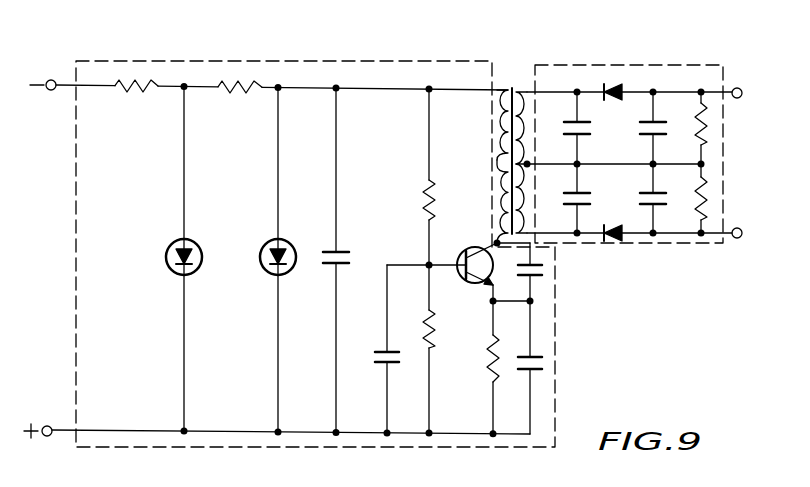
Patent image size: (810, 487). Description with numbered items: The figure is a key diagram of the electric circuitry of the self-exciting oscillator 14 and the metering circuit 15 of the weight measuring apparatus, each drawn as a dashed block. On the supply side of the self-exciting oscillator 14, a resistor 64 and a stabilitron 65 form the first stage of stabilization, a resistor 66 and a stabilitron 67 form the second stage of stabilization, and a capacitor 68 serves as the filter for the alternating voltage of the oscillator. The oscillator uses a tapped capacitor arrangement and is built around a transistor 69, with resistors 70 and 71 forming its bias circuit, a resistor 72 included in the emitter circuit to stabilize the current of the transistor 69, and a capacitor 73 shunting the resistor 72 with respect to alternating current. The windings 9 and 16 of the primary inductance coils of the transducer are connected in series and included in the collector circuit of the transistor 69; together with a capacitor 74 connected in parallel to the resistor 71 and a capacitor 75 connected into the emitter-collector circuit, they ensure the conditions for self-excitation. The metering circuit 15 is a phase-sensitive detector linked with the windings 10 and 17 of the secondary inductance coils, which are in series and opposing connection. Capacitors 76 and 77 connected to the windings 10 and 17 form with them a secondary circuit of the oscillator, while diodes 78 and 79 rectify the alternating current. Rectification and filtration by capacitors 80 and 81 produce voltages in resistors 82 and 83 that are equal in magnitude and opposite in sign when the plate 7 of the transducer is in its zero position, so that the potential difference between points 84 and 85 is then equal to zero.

The plate 7 is at (512, 87).
The winding of the primary inductance coil 9 is at (497, 128).
The winding of the secondary inductance coil 10 is at (527, 122).
The self-exciting oscillator 14 is at (69, 244).
The metering circuit 15 is at (663, 60).
The winding of the primary inductance coil 16 is at (497, 186).
The winding of the secondary inductance coil 17 is at (527, 202).
The resistor 64 is at (135, 93).
The stabilitron 65 is at (167, 262).
The resistor 66 is at (235, 94).
The stabilitron 67 is at (260, 260).
The capacitor 68 is at (349, 258).
The transistor 69 is at (486, 249).
The resistor 70 is at (424, 205).
The resistor 71 is at (436, 326).
The resistor 72 is at (487, 358).
The capacitor 73 is at (542, 360).
The capacitor 74 is at (374, 358).
The capacitor 75 is at (544, 270).
The capacitor 76 is at (590, 128).
The capacitor 77 is at (590, 198).
The diode 78 is at (612, 85).
The diode 79 is at (614, 240).
The capacitor 80 is at (666, 134).
The capacitor 81 is at (666, 204).
The resistor 82 is at (706, 136).
The resistor 83 is at (706, 210).
The point 84 is at (733, 98).
The point 85 is at (740, 228).